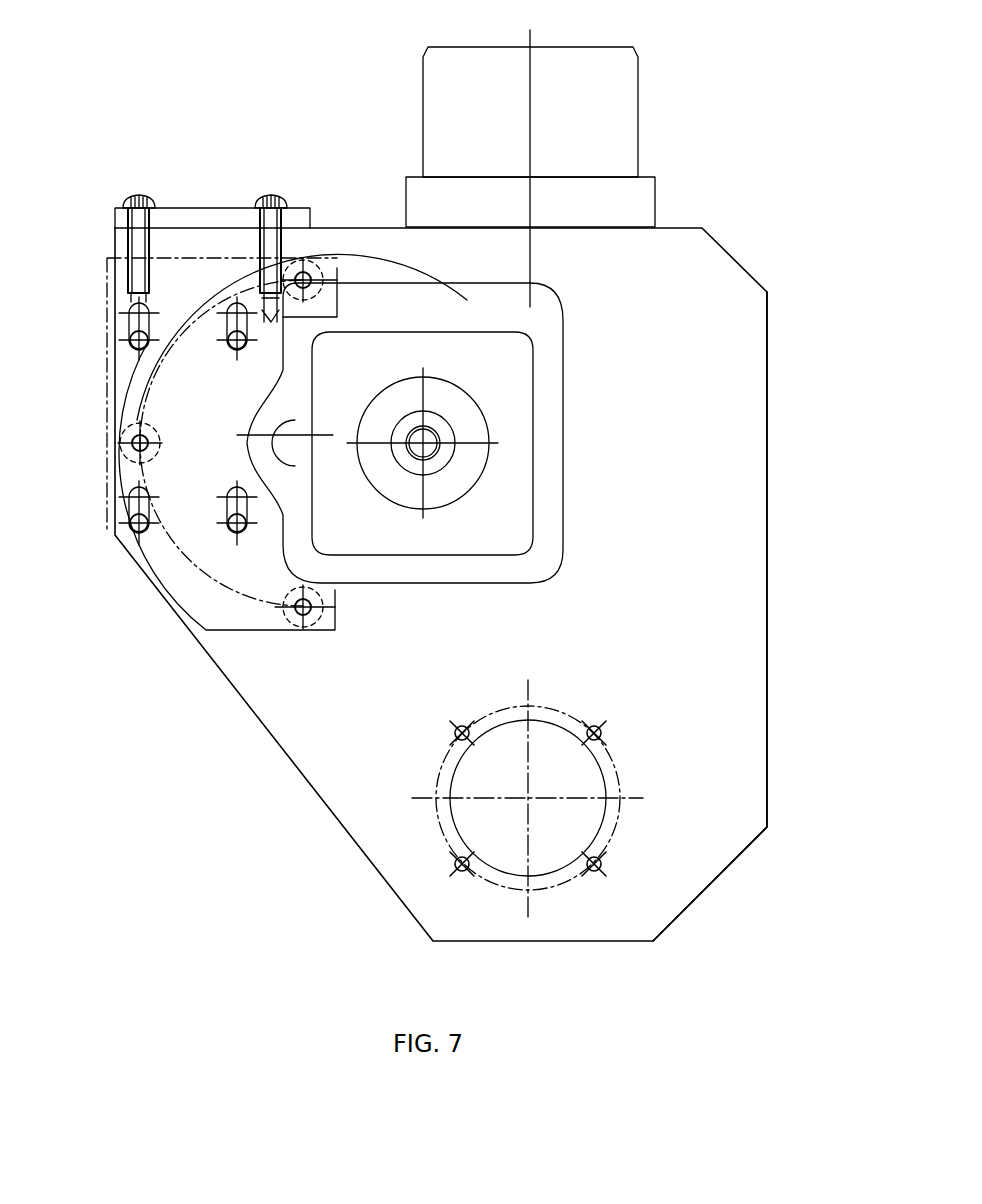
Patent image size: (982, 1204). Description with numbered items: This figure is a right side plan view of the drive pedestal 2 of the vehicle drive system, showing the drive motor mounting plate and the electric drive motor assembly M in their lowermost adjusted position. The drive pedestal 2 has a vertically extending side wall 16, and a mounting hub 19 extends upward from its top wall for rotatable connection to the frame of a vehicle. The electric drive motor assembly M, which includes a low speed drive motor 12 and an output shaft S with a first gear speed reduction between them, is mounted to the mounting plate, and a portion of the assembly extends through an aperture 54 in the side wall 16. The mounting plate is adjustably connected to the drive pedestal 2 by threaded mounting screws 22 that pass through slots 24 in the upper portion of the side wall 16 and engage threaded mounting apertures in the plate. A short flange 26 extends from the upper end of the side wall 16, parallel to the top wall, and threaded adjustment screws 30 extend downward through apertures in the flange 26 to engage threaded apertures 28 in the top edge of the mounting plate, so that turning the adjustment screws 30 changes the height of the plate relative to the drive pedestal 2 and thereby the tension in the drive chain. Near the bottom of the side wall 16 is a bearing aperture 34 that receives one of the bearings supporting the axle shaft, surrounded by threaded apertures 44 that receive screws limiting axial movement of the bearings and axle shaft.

The drive pedestal 2 is at (752, 857).
The low speed drive motor 12 is at (158, 543).
The side wall 16 is at (746, 765).
The mounting hub 19 is at (622, 110).
The threaded mounting screws 22 is at (130, 333).
The slots 24 is at (130, 347).
The short flange 26 is at (217, 217).
The threaded apertures 28 is at (146, 236).
The threaded adjustment screws 30 is at (155, 197).
The bearing apertures 34 is at (558, 863).
The threaded apertures 44 is at (455, 862).
The aperture 54 is at (458, 292).
The electric drive motor assembly M is at (246, 598).
The output shaft S is at (416, 428).